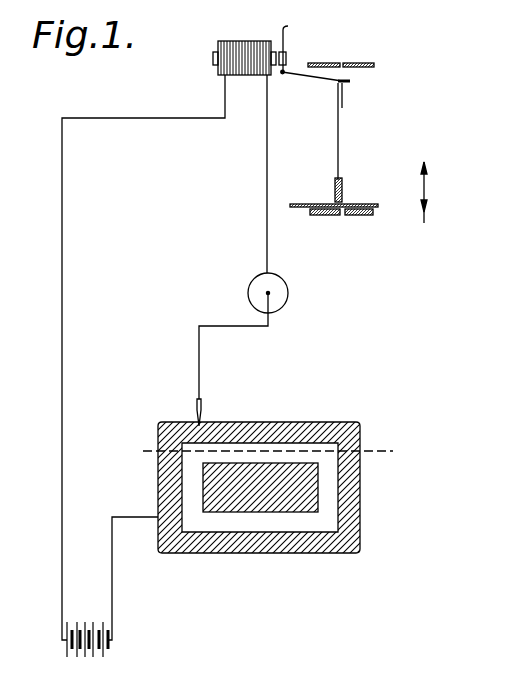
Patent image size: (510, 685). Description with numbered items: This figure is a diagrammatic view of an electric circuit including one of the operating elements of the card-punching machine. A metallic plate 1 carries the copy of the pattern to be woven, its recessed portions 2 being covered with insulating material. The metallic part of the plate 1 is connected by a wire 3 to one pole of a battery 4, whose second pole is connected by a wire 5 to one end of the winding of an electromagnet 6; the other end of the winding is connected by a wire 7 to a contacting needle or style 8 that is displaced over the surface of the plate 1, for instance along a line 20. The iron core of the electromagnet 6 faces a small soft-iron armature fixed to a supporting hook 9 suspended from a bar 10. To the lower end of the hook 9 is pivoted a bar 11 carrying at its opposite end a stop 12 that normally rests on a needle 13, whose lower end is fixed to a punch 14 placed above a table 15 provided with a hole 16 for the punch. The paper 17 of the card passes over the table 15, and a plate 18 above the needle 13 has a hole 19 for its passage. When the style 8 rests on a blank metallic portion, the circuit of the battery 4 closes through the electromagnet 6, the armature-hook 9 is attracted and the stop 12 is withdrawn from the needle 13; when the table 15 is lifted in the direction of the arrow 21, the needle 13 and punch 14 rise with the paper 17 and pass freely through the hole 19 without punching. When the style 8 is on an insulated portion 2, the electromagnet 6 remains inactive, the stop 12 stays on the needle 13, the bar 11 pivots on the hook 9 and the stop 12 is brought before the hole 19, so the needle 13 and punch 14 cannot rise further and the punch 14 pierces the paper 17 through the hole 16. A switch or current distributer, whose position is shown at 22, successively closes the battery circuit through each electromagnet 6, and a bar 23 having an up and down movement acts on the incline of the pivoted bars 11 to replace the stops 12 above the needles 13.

The metallic plate 1 is at (312, 410).
The recessed portions 2 is at (320, 492).
The wire 3 is at (112, 583).
The battery 4 is at (95, 651).
The wire 5 is at (62, 386).
The electromagnet 6 is at (247, 77).
The wire 7 is at (198, 355).
The contacting needle or style 8 is at (203, 410).
The supporting hook 9 is at (281, 38).
The bar 10 is at (288, 34).
The pivoted bar 11 is at (303, 77).
The stop 12 is at (350, 81).
The needle 13 is at (342, 138).
The punch 14 is at (344, 190).
The table 15 is at (361, 216).
The hole 16 is at (336, 216).
The paper 17 is at (364, 203).
The plate 18 is at (362, 62).
The hole 19 is at (342, 62).
The line 20 is at (155, 450).
The arrow 21 is at (428, 190).
The switch or current distributer 22 is at (290, 297).
The bar 23 is at (334, 103).